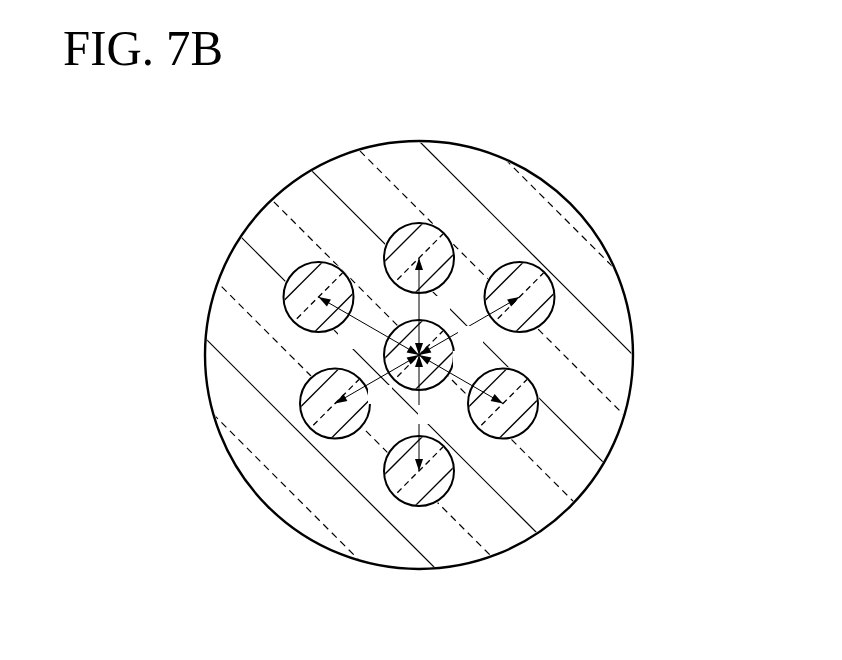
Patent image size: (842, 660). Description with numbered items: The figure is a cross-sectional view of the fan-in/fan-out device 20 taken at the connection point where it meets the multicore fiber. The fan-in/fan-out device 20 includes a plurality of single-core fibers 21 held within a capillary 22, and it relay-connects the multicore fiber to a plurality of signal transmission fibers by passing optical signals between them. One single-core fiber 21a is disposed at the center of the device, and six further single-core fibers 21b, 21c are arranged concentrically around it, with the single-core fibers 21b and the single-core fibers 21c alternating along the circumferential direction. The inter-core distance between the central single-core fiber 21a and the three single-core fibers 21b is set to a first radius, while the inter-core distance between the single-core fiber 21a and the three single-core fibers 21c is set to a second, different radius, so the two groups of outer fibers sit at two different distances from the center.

The fan-in/fan-out device 20 is at (586, 138).
The single-core fibers 21 is at (416, 361).
The single-core fiber 21a is at (385, 352).
The single-core fibers 21b is at (412, 235).
The single-core fibers 21c is at (293, 289).
The capillary 22 is at (592, 252).